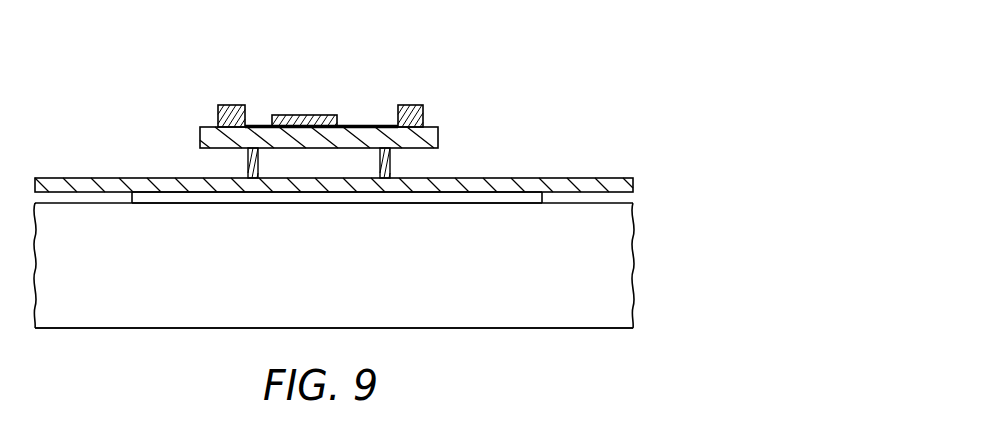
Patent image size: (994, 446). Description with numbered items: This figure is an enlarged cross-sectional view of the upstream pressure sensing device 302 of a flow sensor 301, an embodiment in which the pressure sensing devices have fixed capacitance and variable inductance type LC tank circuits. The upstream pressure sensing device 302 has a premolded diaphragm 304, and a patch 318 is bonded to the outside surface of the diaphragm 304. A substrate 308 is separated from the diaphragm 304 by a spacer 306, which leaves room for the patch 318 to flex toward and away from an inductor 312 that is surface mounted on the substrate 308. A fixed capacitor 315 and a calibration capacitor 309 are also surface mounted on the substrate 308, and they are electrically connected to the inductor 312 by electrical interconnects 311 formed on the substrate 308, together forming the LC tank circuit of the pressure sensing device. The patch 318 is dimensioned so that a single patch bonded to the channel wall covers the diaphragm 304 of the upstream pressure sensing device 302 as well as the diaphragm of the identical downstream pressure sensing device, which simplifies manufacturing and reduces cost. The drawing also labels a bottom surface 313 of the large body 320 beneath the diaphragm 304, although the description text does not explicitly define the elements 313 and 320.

The flow sensor 301 is at (657, 112).
The upstream pressure sensing device 302 is at (543, 83).
The premolded diaphragm 304 is at (495, 203).
The spacer 306 is at (248, 165).
The substrate 308 is at (438, 137).
The calibration capacitor 309 is at (412, 105).
The electrical interconnects 311 is at (363, 126).
The inductor 312 is at (305, 114).
The bottom surface 313 is at (503, 328).
The fixed capacitor 315 is at (232, 105).
The patch 318 is at (440, 178).
The base substrate 320 is at (293, 289).